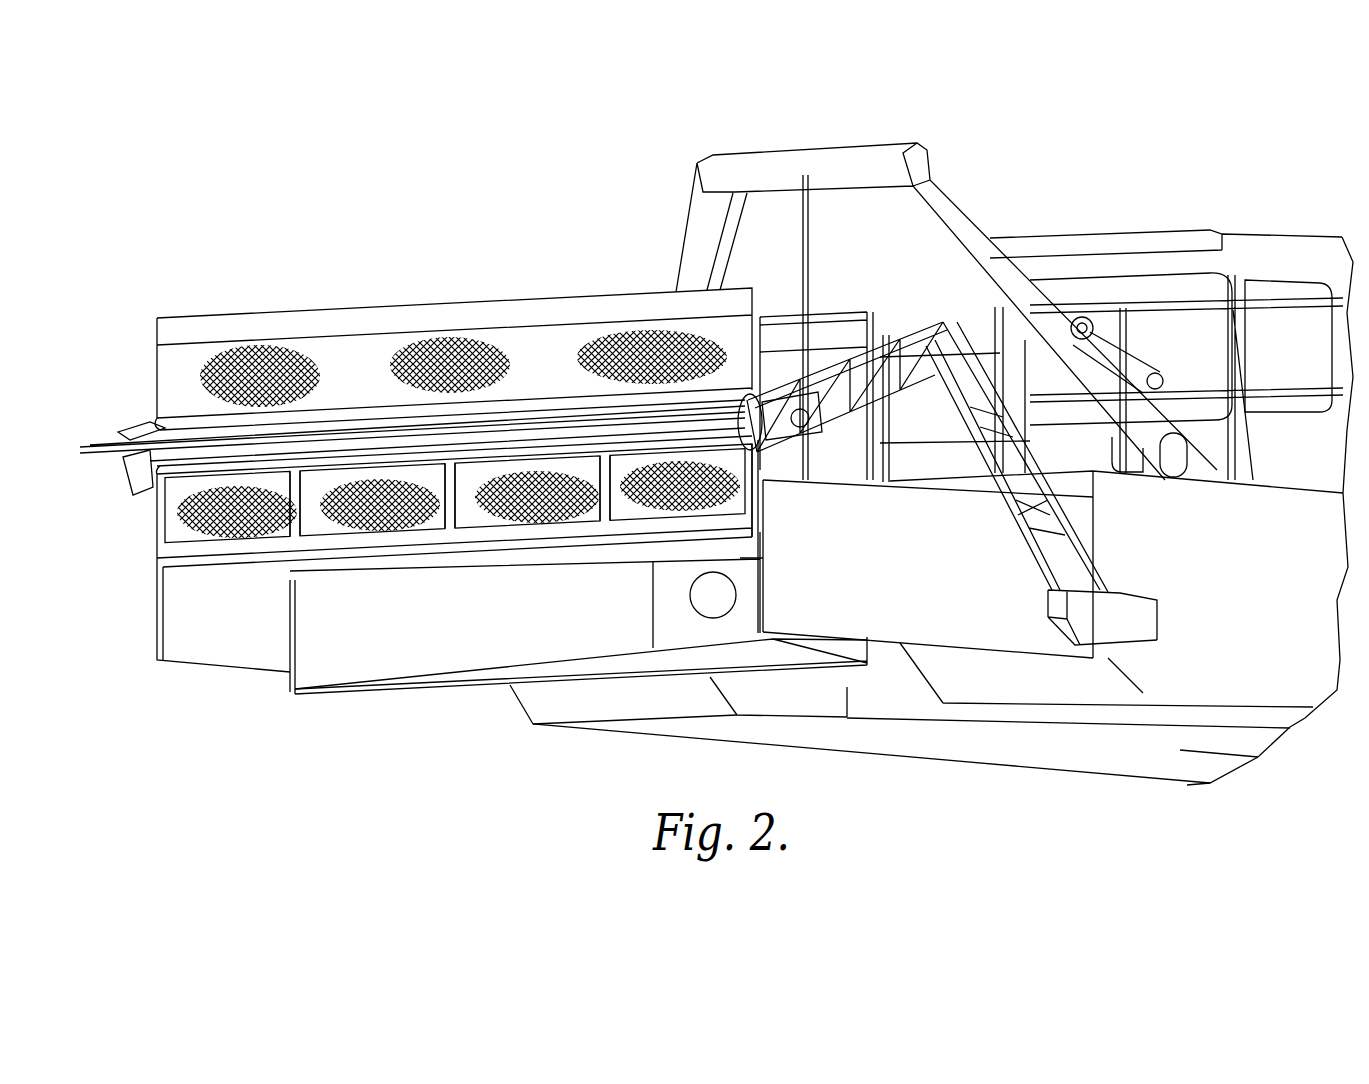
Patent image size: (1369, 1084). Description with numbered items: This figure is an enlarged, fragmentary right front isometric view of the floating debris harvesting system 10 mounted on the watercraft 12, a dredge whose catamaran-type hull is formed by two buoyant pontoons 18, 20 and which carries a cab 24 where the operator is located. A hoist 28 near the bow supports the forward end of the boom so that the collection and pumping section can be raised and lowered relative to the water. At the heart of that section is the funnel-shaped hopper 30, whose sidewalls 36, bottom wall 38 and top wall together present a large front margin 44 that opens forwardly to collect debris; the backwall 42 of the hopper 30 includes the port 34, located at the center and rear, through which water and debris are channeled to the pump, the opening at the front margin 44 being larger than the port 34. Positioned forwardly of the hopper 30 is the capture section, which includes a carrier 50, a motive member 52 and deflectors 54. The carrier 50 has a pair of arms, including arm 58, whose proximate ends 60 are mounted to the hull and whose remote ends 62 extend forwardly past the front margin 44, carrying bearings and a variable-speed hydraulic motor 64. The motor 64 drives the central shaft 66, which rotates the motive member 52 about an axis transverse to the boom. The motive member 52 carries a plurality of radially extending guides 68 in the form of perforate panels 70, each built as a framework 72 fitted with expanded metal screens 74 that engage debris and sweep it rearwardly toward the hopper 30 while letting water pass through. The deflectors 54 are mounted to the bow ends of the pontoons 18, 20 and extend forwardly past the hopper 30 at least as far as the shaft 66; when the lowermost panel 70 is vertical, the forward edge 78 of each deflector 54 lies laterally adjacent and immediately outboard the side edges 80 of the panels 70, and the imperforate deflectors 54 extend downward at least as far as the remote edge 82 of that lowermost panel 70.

The floating debris harvesting system 10 is at (205, 690).
The watercraft 12 is at (1195, 795).
The pontoon 18 is at (985, 752).
The pontoon 20 is at (1275, 682).
The cab 24 is at (1298, 235).
The hoist 28 is at (955, 200).
The hopper 30 is at (408, 660).
The port 34 is at (690, 595).
The sidewalls 36 is at (865, 708).
The bottom wall 38 is at (613, 667).
The backwall 42 is at (680, 632).
The front margin 44 is at (330, 695).
The carrier 50 is at (1113, 627).
The motive member 52 is at (180, 325).
The deflectors 54 is at (165, 620).
The arm 58 is at (935, 325).
The proximate ends 60 is at (1132, 610).
The remote ends 62 is at (775, 390).
The hydraulic motor 64 is at (793, 430).
The central shaft 66 is at (160, 462).
The guides 68 is at (345, 320).
The perforate panels 70 is at (424, 330).
The framework 72 is at (268, 560).
The expanded metal screens 74 is at (518, 335).
The forward edge 78 is at (766, 592).
The side edges 80 is at (755, 300).
The remote edge 82 is at (388, 578).